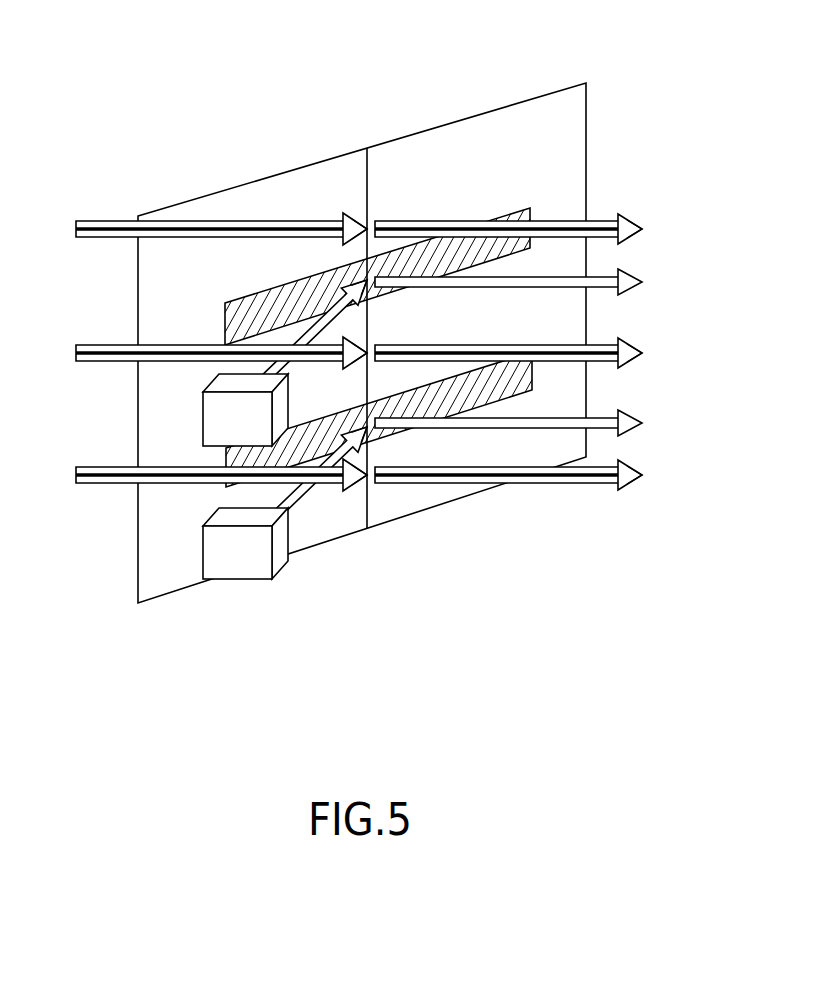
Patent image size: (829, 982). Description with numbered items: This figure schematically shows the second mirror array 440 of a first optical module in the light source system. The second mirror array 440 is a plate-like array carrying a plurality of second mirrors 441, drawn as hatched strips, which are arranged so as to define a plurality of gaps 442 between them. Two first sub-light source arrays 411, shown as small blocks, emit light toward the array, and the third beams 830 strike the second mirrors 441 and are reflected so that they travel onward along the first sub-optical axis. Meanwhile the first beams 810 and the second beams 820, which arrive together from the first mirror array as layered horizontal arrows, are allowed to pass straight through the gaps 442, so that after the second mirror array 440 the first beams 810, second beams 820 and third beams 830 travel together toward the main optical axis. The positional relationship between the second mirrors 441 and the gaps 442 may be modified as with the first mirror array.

The first sub-light source array 411 is at (240, 572).
The second mirror array 440 is at (530, 98).
The second mirror 441 is at (530, 208).
The gap 442 is at (443, 205).
The first beam 810 is at (115, 233).
The second beam 820 is at (90, 227).
The third beam 830 is at (314, 331).